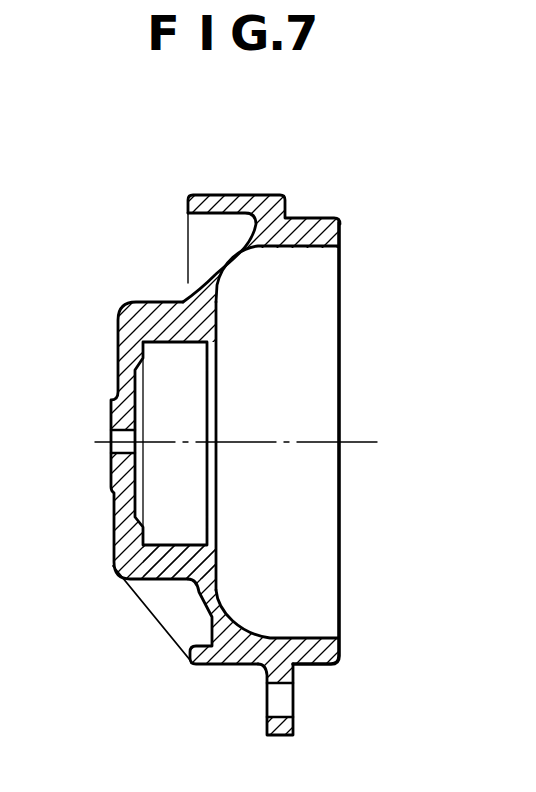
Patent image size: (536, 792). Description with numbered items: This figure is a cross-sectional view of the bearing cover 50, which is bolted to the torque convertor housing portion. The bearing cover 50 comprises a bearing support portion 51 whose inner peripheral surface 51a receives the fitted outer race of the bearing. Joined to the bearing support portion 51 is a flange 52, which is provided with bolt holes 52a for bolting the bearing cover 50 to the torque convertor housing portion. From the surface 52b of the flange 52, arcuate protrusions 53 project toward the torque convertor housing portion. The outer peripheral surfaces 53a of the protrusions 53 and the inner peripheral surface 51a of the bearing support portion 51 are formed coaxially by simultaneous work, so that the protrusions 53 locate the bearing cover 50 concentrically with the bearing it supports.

The bearing cover 50 is at (276, 177).
The bearing support portion 51 is at (127, 565).
The inner peripheral surface 51a is at (165, 540).
The flange 52 is at (285, 725).
The bolt holes 52a is at (273, 701).
The surface of the flange 52b is at (297, 722).
The arcuate protrusions 53 is at (342, 652).
The outer peripheral surfaces 53a is at (315, 218).